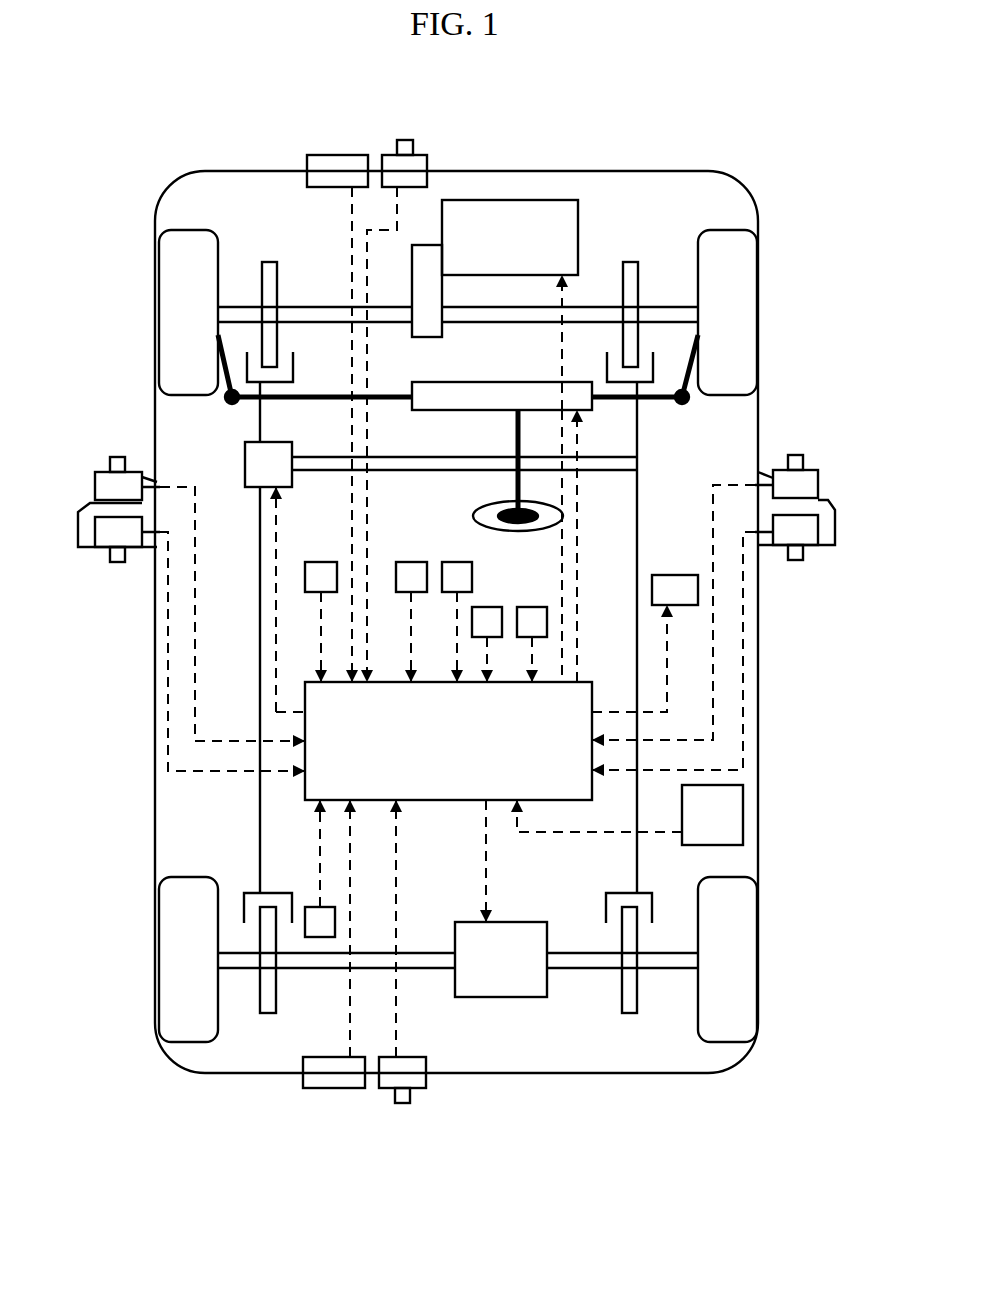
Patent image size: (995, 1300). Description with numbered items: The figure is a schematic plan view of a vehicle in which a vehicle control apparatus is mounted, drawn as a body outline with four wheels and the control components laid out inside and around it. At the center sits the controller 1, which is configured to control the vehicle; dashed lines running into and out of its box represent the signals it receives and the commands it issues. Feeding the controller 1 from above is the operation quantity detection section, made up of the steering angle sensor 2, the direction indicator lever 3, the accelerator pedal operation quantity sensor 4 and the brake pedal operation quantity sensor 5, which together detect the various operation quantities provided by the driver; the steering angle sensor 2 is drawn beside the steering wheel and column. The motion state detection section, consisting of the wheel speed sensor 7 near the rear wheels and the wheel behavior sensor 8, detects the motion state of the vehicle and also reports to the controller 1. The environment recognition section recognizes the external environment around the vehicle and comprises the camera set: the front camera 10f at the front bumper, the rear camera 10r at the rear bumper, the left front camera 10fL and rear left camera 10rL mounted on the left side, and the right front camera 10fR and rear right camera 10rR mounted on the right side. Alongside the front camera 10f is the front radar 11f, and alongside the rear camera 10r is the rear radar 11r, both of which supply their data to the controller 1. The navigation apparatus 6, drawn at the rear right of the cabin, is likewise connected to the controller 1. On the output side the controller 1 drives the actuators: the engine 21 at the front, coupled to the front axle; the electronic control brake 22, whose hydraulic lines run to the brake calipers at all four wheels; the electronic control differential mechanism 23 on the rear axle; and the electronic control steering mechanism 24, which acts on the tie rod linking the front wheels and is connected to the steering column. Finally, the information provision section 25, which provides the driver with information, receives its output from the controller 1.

The controller 1 is at (437, 803).
The steering angle sensor 2 is at (530, 607).
The direction indicator lever 3 is at (485, 607).
The accelerator pedal operation quantity sensor 4 is at (450, 562).
The brake pedal operation quantity sensor 5 is at (404, 562).
The navigation apparatus 6 is at (743, 805).
The wheel speed sensor 7 is at (307, 907).
The wheel behavior sensor 8 is at (322, 562).
The front camera 10f is at (422, 152).
The rear camera 10r is at (417, 1088).
The left front camera 10fL is at (118, 457).
The rear left camera 10rL is at (118, 562).
The right front camera 10fR is at (802, 455).
The rear right camera 10rR is at (803, 562).
The front radar 11f is at (333, 155).
The rear radar 11r is at (332, 1088).
The engine 21 is at (578, 218).
The electronic control brake 22 is at (245, 462).
The electronic control differential mechanism 23 is at (500, 1000).
The electronic control steering mechanism 24 is at (455, 382).
The information provision section 25 is at (672, 575).